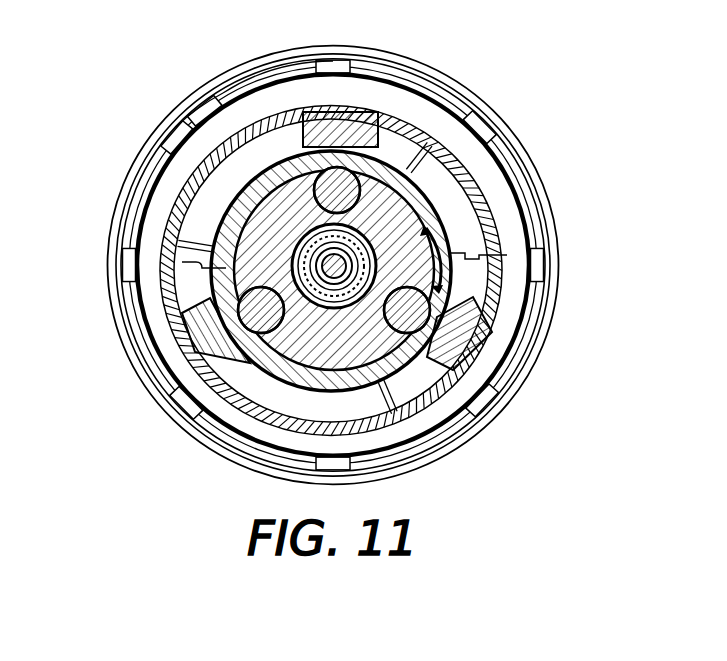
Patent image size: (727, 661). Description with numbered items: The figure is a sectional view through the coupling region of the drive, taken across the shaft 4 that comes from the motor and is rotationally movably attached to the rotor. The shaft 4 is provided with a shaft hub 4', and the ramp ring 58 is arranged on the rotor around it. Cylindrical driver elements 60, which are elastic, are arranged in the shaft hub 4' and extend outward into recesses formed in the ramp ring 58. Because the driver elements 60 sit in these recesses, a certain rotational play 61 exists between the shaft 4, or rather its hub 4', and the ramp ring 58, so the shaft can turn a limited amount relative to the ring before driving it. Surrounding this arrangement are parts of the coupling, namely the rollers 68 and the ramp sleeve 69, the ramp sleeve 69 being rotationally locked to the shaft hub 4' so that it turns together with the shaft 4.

The shaft 4 is at (248, 105).
The shaft hub 4' is at (159, 129).
The ramp ring 58 is at (182, 262).
The driver elements 60 is at (503, 148).
The rotational play 61 is at (450, 253).
The rollers 68 is at (408, 118).
The ramp sleeve 69 is at (497, 197).